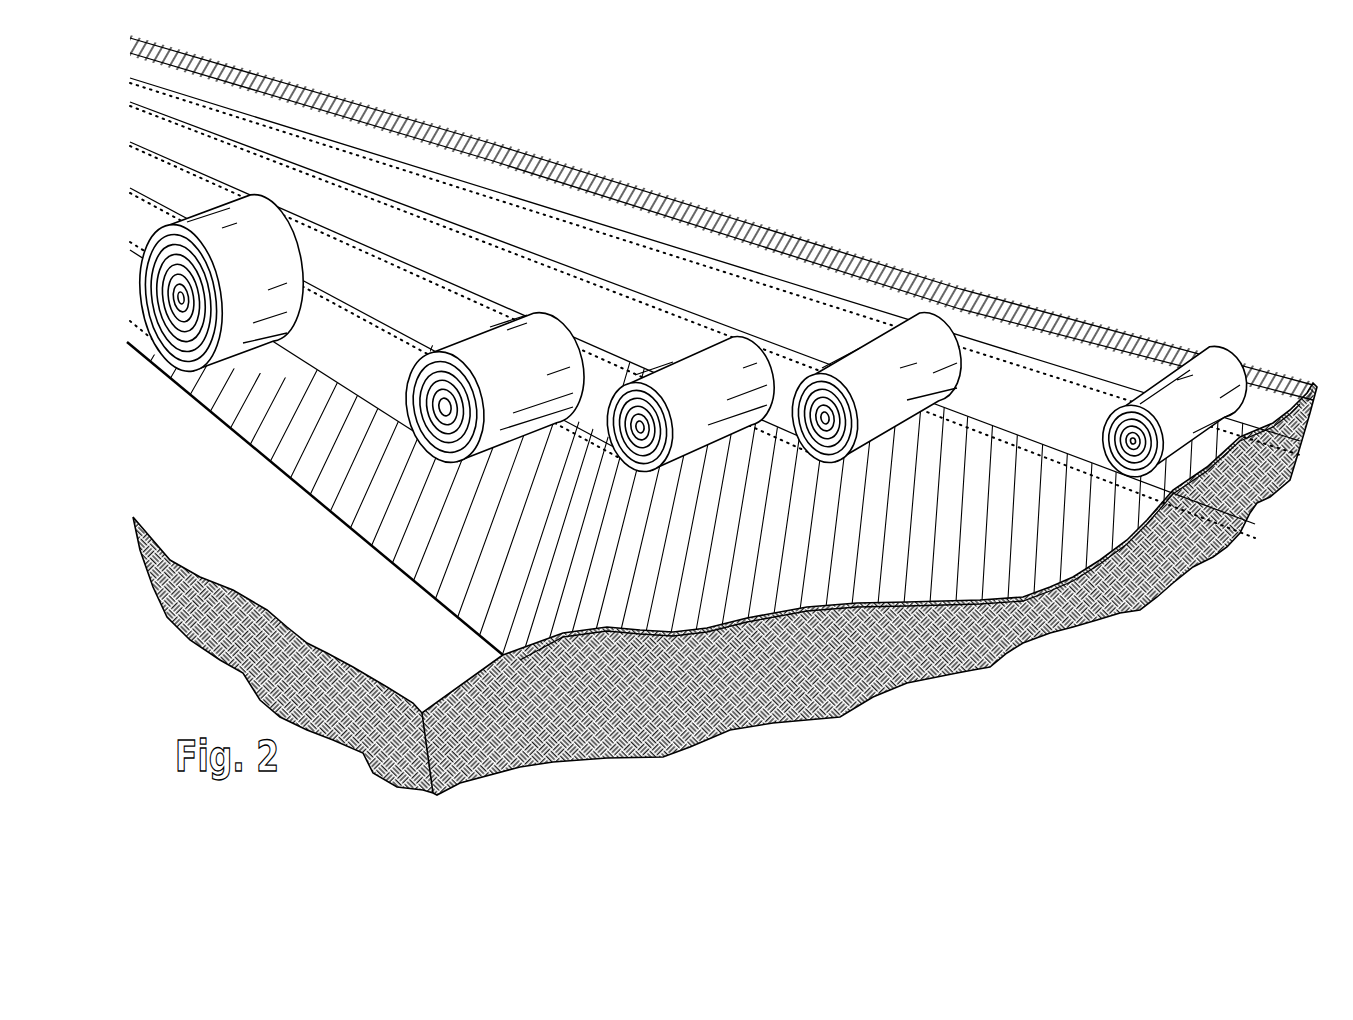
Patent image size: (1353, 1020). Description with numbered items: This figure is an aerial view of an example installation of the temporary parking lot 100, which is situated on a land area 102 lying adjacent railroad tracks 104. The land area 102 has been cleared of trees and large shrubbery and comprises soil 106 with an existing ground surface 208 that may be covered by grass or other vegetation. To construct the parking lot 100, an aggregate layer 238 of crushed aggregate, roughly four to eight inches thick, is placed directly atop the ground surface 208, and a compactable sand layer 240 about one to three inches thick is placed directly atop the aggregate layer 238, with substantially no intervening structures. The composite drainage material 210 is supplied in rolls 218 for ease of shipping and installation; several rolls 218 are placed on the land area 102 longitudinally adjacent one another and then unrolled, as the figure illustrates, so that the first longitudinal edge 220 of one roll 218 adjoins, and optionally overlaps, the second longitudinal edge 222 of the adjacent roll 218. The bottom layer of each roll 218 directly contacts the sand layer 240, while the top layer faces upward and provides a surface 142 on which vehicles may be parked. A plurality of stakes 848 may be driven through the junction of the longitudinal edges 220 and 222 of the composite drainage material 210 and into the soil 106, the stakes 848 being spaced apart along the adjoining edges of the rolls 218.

The parking lot 100 is at (722, 415).
The land area 102 is at (880, 700).
The railroad tracks 104 is at (737, 233).
The soil 106 is at (643, 710).
The surface 142 is at (637, 265).
The ground surface 208 is at (302, 550).
The composite drainage material 210 is at (1035, 397).
The rolls 218 is at (262, 264).
The first longitudinal edge 220 is at (358, 248).
The second longitudinal edge 222 is at (766, 330).
The aggregate layer 238 is at (1032, 547).
The sand layer 240 is at (1002, 538).
The stakes 848 is at (418, 276).